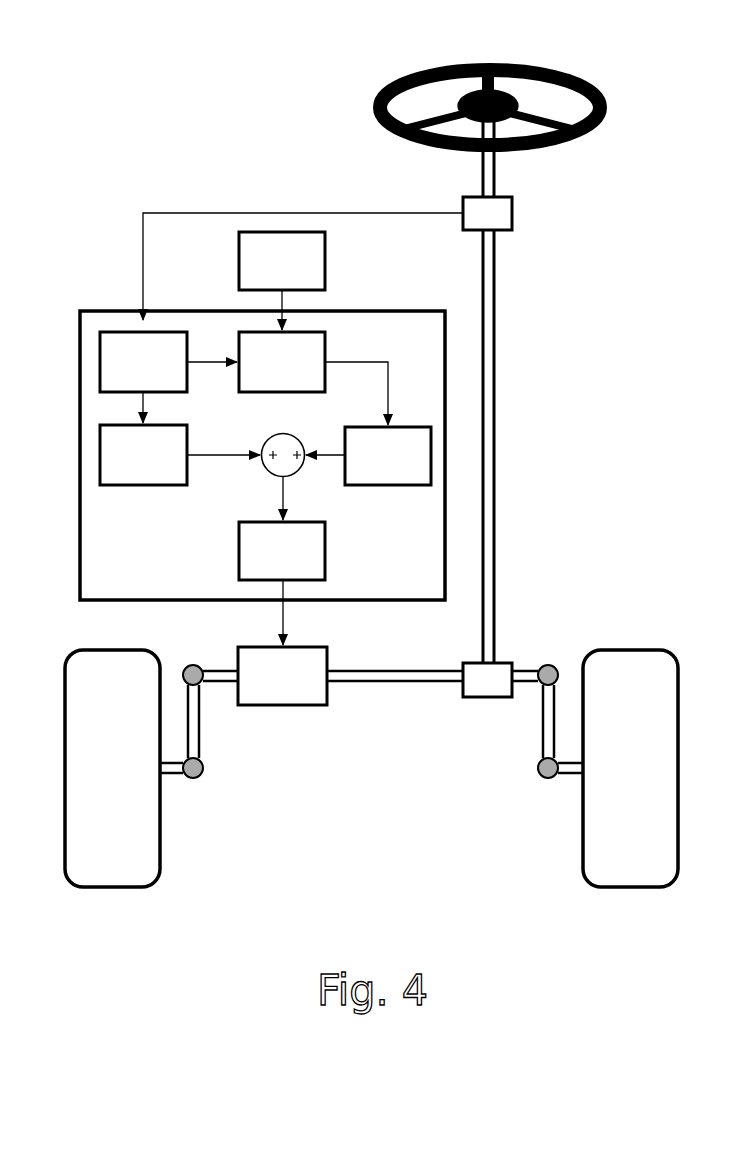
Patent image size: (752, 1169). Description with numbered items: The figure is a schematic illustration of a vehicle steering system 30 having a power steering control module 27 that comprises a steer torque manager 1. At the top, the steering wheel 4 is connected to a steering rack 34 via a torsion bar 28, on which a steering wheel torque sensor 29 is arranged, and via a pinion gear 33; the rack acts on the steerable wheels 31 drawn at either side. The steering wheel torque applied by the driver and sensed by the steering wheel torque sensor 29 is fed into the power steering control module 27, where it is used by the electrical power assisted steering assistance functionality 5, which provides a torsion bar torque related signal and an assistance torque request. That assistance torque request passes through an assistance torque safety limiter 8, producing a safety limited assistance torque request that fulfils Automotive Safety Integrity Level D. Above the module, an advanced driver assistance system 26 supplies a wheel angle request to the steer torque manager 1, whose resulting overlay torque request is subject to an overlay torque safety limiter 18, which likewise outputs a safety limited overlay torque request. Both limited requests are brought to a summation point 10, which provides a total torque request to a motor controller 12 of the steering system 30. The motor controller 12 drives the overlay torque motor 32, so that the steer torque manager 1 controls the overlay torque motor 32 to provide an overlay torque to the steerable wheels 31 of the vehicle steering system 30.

The steering wheel 4 is at (530, 65).
The torsion bar 28 is at (487, 316).
The steering wheel torque sensor 29 is at (498, 216).
The steering system 30 is at (523, 481).
The power steering control module 27 is at (337, 310).
The advanced driver assistance system 26 is at (266, 276).
The electrical power assisted steering assistance functionality 5 is at (135, 376).
The steer torque manager 1 is at (274, 376).
The assistance torque safety limiter 8 is at (135, 470).
The overlay torque safety limiter 18 is at (372, 470).
The summation point 10 is at (282, 467).
The motor controller 12 is at (266, 566).
The overlay torque motor 32 is at (266, 690).
The pinion gear 33 is at (482, 678).
The steering rack 34 is at (393, 677).
The steerable wheels 31 is at (96, 784).